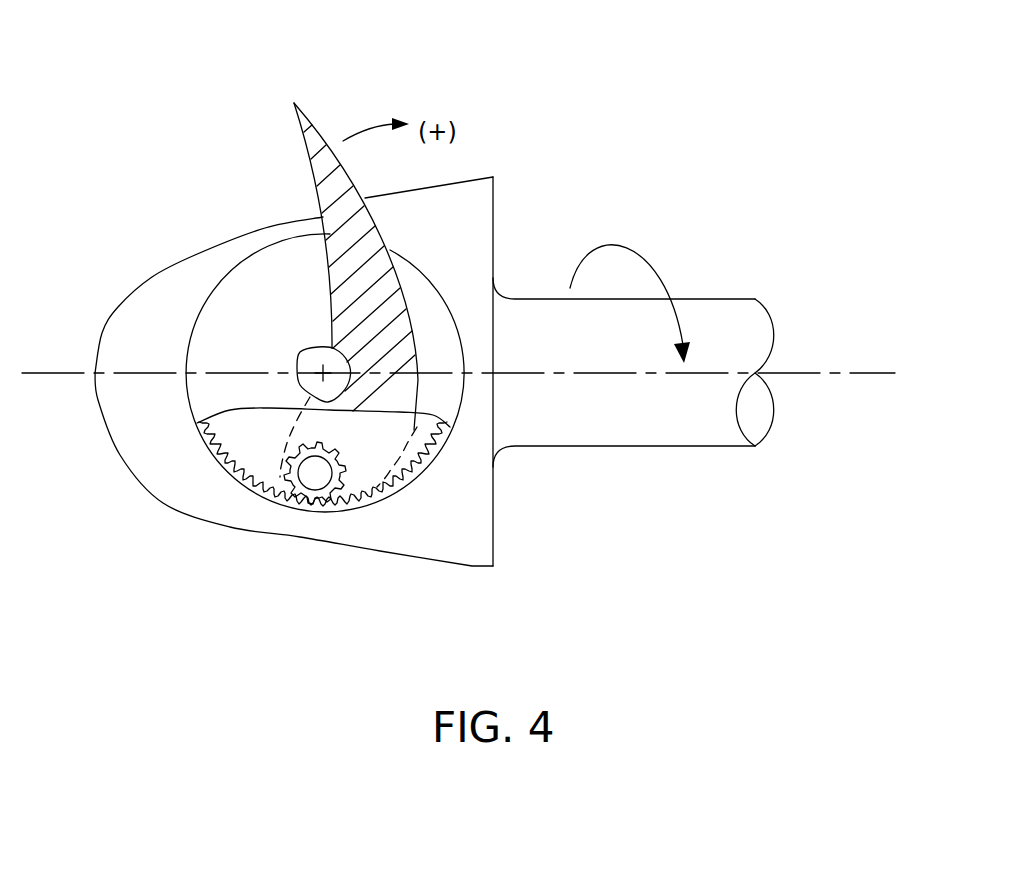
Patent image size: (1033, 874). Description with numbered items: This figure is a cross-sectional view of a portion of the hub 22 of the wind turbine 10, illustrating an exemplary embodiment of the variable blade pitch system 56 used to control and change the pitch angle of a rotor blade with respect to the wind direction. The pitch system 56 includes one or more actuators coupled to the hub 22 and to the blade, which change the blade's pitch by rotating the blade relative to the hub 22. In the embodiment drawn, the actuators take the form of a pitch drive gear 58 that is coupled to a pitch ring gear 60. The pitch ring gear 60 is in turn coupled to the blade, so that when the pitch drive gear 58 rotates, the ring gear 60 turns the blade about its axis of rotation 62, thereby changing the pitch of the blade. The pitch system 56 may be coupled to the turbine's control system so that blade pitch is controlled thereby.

The wind turbine 10 is at (612, 52).
The hub 22 is at (472, 566).
The variable blade pitch system 56 is at (224, 544).
The pitch drive gear 58 is at (350, 504).
The pitch ring gear 60 is at (222, 458).
The axis of rotation 62 is at (323, 373).